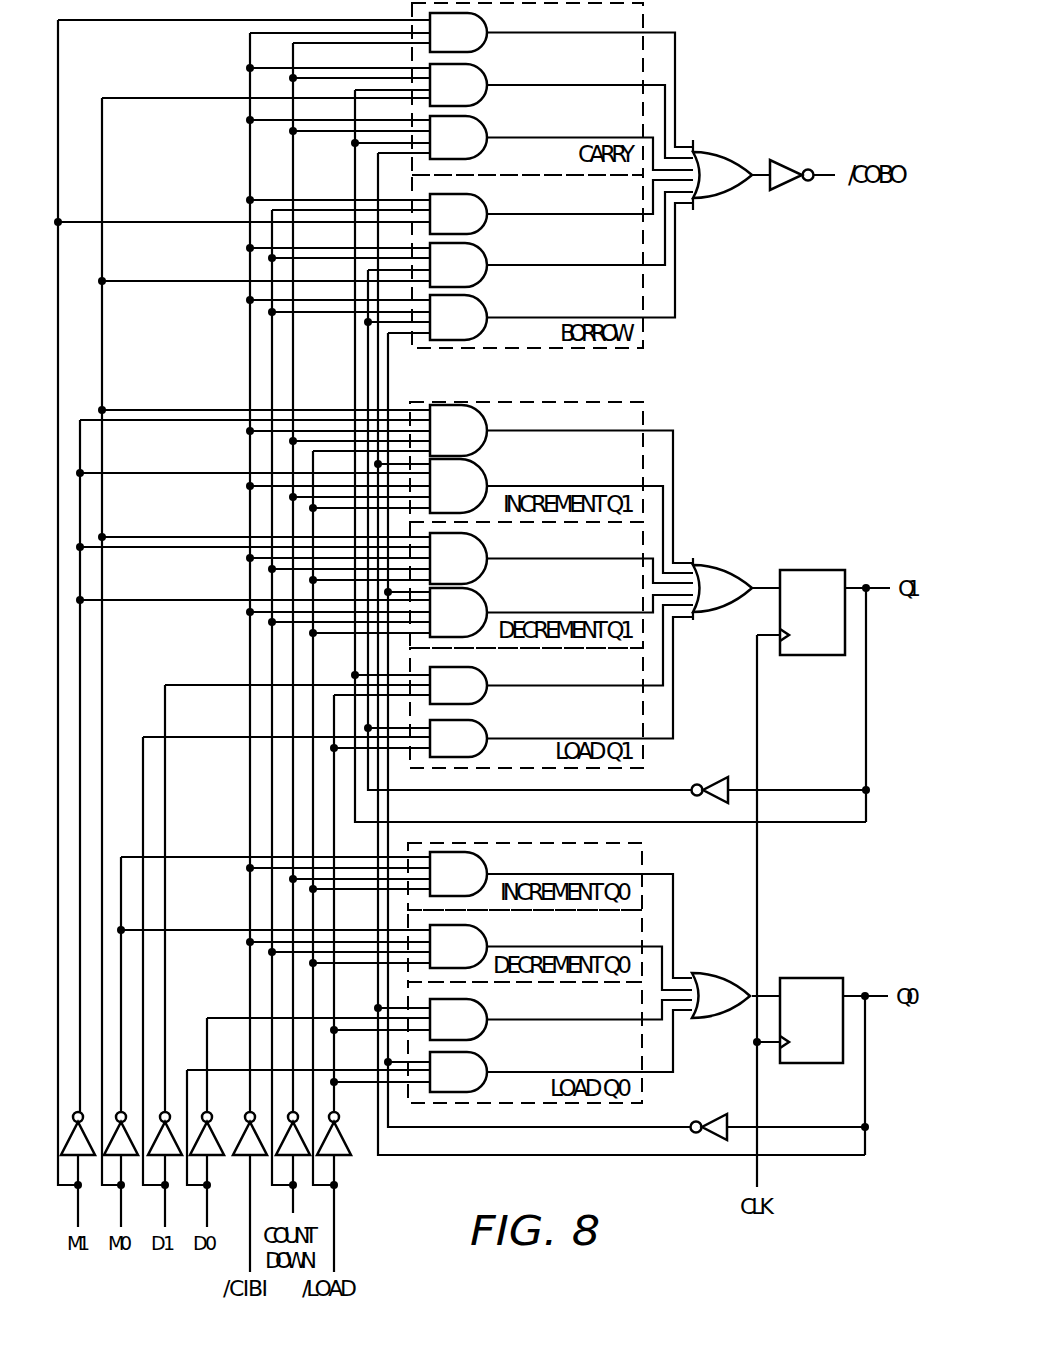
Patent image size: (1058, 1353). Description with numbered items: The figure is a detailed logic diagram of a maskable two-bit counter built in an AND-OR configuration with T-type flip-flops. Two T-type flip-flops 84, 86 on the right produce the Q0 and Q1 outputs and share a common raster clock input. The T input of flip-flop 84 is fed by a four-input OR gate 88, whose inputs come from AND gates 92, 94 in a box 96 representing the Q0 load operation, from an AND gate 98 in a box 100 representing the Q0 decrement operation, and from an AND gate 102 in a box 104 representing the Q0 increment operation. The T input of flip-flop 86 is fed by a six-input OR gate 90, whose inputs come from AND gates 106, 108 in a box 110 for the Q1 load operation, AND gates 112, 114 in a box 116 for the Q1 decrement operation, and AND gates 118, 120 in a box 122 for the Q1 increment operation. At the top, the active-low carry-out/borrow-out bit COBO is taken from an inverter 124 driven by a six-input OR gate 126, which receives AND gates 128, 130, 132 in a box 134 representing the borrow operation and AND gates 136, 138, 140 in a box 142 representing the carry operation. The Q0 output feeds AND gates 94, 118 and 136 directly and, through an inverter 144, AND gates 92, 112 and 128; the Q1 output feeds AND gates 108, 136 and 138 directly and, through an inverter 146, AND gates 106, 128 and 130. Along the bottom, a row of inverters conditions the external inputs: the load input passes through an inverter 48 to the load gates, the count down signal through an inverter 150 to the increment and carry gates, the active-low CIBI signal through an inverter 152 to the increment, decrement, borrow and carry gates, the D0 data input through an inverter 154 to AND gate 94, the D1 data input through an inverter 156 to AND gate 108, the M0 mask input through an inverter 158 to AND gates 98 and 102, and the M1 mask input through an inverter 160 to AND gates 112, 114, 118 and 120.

The load inverter 48 is at (347, 1160).
The T-type flip-flop 84 is at (817, 978).
The T-type flip-flop 86 is at (818, 570).
The four-input OR gate 88 is at (720, 973).
The six-input OR gate 90 is at (714, 565).
The AND gate 92 is at (468, 1085).
The AND gate 94 is at (468, 1033).
The box 96 is at (608, 1013).
The AND gate 98 is at (468, 960).
The box 100 is at (613, 941).
The AND gate 102 is at (474, 887).
The box 104 is at (613, 871).
The AND gate 106 is at (474, 752).
The AND gate 108 is at (474, 699).
The box 110 is at (592, 719).
The AND gate 112 is at (474, 626).
The AND gate 114 is at (474, 572).
The box 116 is at (592, 598).
The AND gate 118 is at (474, 499).
The AND gate 120 is at (474, 444).
The box 122 is at (592, 469).
The inverter 124 is at (790, 160).
The six-input OR gate 126 is at (715, 152).
The AND gate 128 is at (474, 331).
The AND gate 130 is at (474, 278).
The AND gate 132 is at (474, 227).
The box 134 is at (588, 303).
The AND gate 136 is at (474, 151).
The AND gate 138 is at (474, 98).
The AND gate 140 is at (474, 46).
The box 142 is at (585, 77).
The inverter 144 is at (710, 1114).
The inverter 146 is at (712, 777).
The inverter 150 is at (297, 1160).
The inverter 152 is at (243, 1158).
The inverter 154 is at (212, 1133).
The inverter 156 is at (178, 1158).
The inverter 158 is at (135, 1158).
The inverter 160 is at (93, 1158).